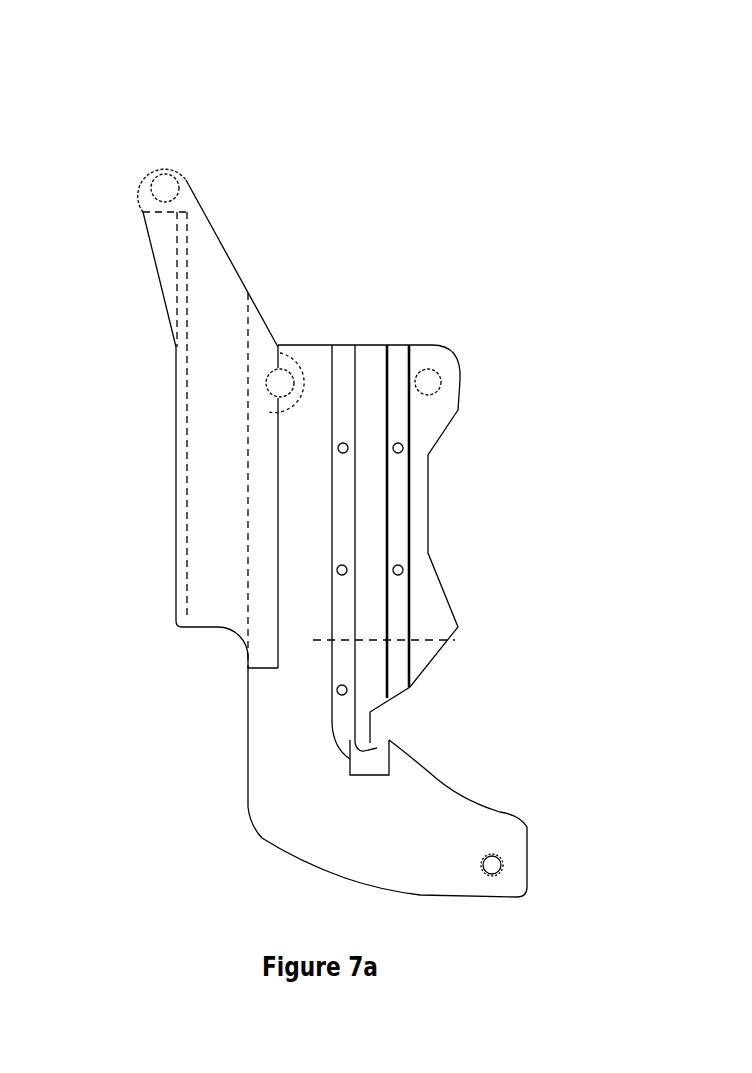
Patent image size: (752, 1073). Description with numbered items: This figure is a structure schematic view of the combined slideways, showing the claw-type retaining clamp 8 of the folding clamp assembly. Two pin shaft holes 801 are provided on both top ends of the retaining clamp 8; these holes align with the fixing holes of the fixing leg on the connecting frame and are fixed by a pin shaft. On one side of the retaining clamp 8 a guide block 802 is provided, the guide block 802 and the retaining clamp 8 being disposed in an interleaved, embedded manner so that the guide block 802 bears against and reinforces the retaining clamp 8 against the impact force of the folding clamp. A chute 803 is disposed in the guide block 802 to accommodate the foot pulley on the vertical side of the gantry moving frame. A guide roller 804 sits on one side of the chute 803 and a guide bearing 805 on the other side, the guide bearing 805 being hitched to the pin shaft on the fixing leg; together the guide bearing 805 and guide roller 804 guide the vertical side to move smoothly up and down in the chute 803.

The retaining clamp 8 is at (418, 542).
The pin shaft holes 801 is at (282, 381).
The guide block 802 is at (267, 637).
The chute 803 is at (222, 293).
The guide roller 804 is at (165, 193).
The guide bearing 805 is at (263, 417).